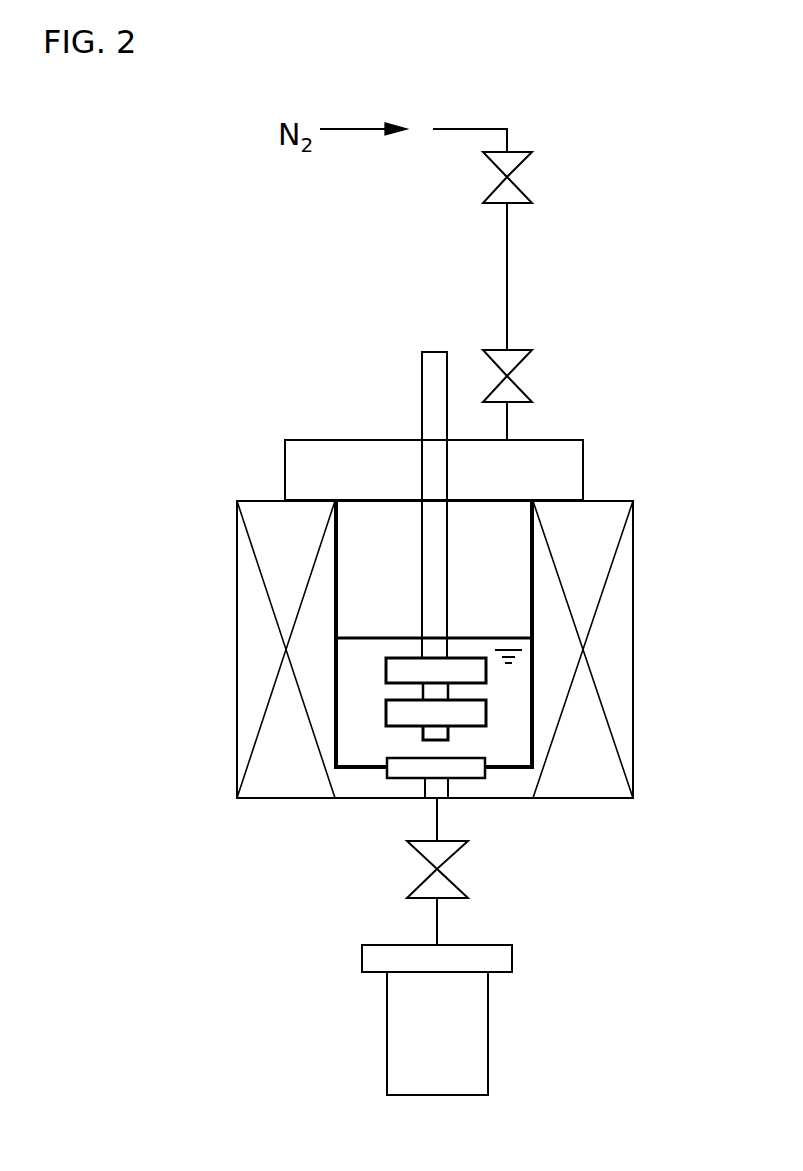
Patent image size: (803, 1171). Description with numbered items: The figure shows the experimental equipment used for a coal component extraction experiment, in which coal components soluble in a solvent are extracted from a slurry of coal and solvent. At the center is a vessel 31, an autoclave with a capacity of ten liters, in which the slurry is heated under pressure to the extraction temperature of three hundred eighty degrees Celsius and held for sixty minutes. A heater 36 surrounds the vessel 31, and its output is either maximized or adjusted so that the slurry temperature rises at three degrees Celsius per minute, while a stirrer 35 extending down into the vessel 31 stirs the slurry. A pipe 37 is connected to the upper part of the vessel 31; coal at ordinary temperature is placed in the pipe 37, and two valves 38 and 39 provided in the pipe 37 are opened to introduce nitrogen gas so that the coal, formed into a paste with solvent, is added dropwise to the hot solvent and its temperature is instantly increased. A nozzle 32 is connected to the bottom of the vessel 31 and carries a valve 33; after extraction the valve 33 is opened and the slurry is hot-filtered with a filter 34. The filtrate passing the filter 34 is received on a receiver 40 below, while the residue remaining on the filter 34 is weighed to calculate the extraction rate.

The vessel 31 is at (338, 593).
The nozzle 32 is at (437, 812).
The valve 33 is at (455, 880).
The filter 34 is at (422, 768).
The stirrer 35 is at (422, 392).
The heater 36 is at (237, 635).
The pipe 37 is at (507, 286).
The valve 38 is at (530, 395).
The valve 39 is at (525, 195).
The receiver 40 is at (488, 1037).